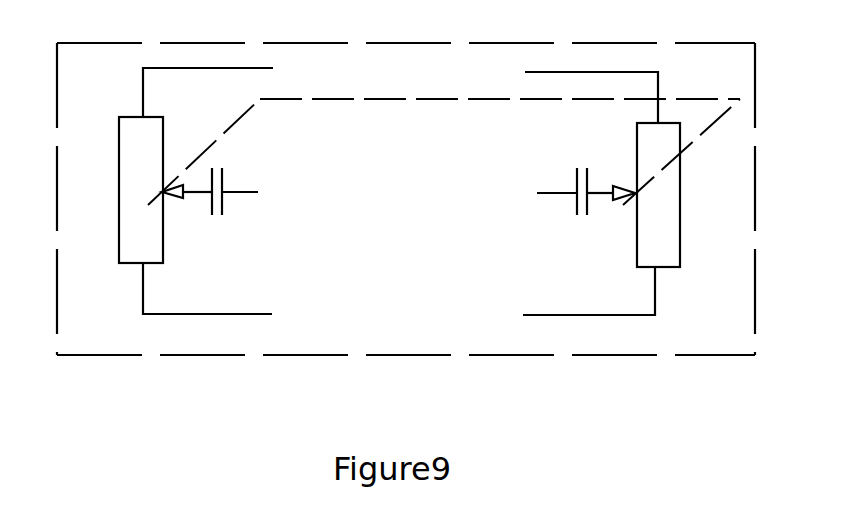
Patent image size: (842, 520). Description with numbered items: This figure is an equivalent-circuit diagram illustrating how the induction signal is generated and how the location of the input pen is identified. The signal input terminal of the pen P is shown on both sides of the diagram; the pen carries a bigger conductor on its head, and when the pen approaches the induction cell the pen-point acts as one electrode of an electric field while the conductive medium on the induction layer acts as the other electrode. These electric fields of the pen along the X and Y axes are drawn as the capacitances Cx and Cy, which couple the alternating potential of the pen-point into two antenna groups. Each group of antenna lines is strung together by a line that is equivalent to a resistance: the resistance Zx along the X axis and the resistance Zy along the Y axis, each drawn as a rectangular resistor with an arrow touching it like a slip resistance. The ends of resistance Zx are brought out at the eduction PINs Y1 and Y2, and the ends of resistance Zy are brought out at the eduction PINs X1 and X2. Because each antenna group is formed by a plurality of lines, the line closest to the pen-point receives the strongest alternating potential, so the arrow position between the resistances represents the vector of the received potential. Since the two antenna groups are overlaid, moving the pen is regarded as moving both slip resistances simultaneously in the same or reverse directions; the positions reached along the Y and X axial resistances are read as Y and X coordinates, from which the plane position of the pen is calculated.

The resistance Zx is at (141, 190).
The resistance Zy is at (658, 195).
The electric field along X axis Cx is at (210, 206).
The electric field along Y axis Cy is at (586, 208).
The eduction PIN along Y axis Y1 is at (226, 90).
The eduction PIN along Y axis Y2 is at (224, 294).
The eduction PIN along X axis X1 is at (576, 93).
The eduction PIN along X axis X2 is at (573, 296).
The signal input terminal of the pen P is at (400, 194).